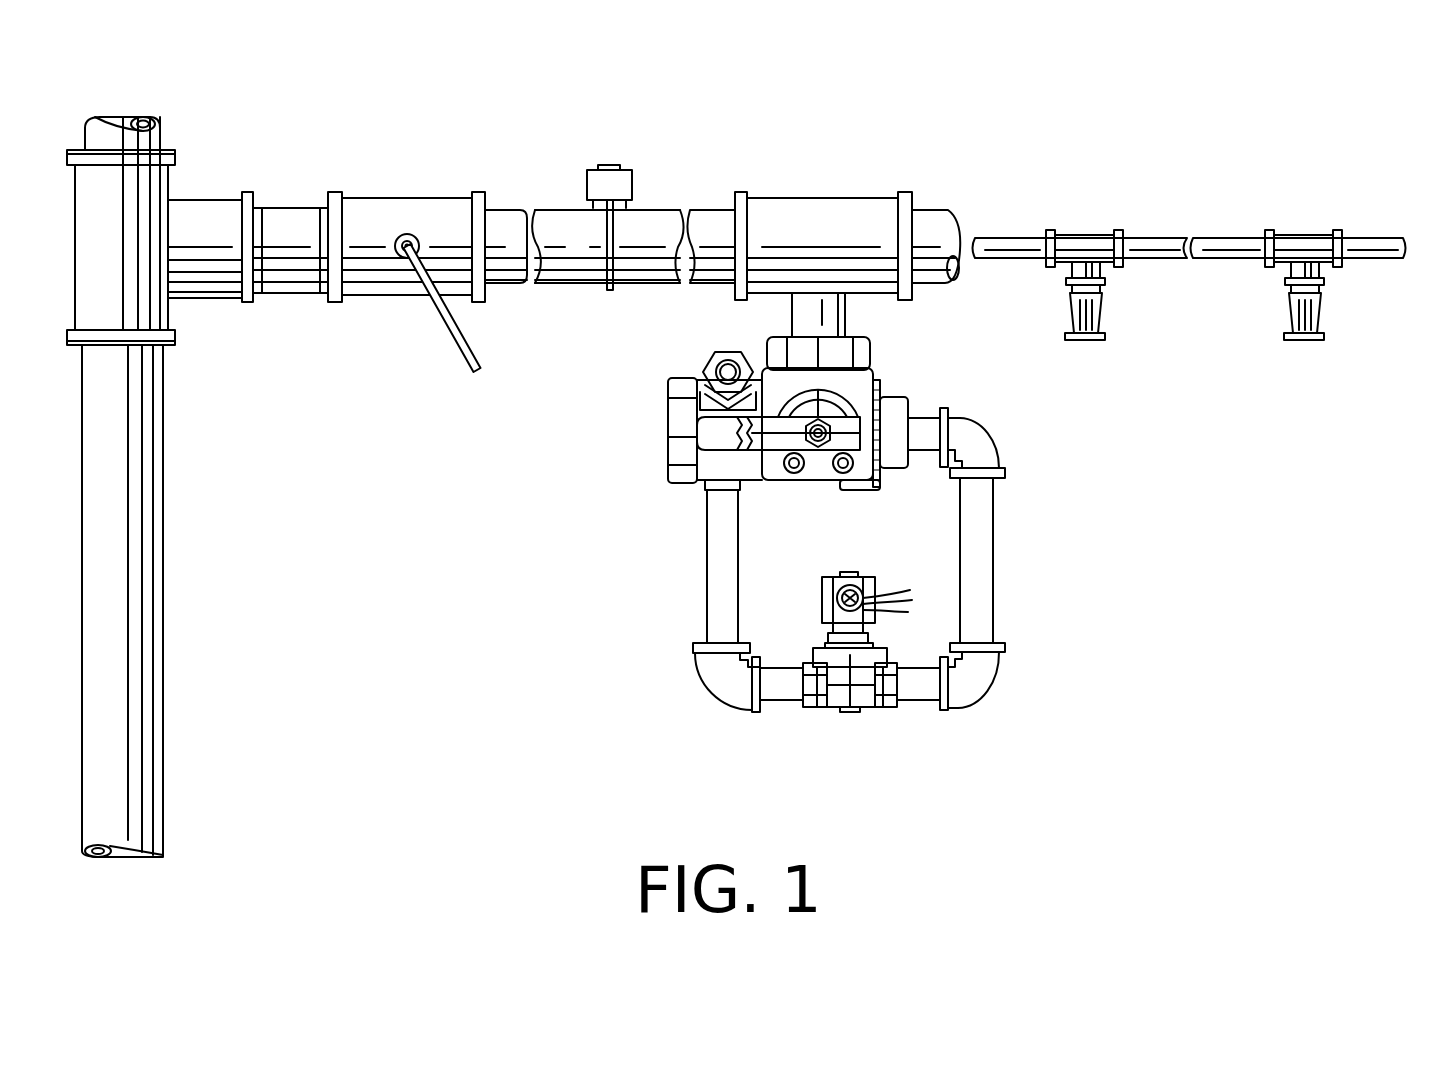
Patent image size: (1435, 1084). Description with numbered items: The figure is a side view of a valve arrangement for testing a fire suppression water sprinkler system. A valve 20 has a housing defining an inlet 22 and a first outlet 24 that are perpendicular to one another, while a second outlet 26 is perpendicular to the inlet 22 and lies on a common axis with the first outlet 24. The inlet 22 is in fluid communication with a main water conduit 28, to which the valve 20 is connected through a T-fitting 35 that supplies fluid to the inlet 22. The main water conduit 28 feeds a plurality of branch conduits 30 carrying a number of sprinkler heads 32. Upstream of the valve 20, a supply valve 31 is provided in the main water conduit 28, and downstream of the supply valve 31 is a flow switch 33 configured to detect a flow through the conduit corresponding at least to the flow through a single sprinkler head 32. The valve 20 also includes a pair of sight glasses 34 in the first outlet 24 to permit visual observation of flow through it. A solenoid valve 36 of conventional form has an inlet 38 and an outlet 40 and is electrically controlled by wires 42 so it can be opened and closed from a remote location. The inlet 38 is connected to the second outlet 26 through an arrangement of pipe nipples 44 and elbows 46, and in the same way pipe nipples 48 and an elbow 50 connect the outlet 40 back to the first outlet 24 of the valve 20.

The valve 20 is at (877, 380).
The inlet 22 is at (873, 350).
The first outlet 24 is at (668, 445).
The second outlet 26 is at (880, 488).
The main water conduit 28 is at (298, 205).
The branch conduits 30 is at (1007, 238).
The supply valve 31 is at (437, 200).
The sprinkler heads 32 is at (1100, 292).
The flow switch 33 is at (627, 168).
The sight glasses 34 is at (718, 355).
The T-fitting 35 is at (836, 198).
The solenoid valve 36 is at (833, 714).
The inlet 38 is at (885, 708).
The outlet 40 is at (808, 708).
The wires 42 is at (898, 582).
The pipe nipples 44 is at (922, 416).
The elbows 46 is at (985, 430).
The pipe nipples 48 is at (707, 560).
The elbow 50 is at (722, 700).